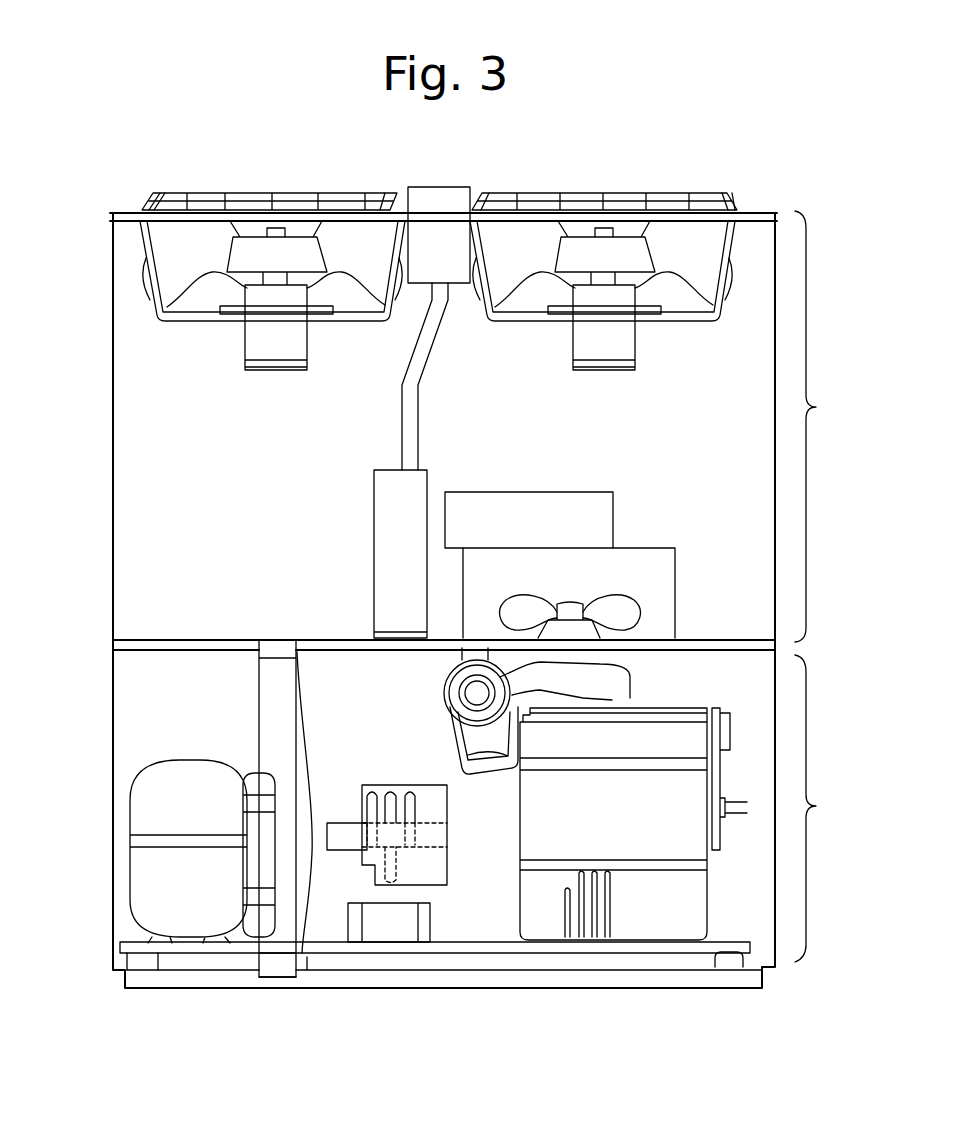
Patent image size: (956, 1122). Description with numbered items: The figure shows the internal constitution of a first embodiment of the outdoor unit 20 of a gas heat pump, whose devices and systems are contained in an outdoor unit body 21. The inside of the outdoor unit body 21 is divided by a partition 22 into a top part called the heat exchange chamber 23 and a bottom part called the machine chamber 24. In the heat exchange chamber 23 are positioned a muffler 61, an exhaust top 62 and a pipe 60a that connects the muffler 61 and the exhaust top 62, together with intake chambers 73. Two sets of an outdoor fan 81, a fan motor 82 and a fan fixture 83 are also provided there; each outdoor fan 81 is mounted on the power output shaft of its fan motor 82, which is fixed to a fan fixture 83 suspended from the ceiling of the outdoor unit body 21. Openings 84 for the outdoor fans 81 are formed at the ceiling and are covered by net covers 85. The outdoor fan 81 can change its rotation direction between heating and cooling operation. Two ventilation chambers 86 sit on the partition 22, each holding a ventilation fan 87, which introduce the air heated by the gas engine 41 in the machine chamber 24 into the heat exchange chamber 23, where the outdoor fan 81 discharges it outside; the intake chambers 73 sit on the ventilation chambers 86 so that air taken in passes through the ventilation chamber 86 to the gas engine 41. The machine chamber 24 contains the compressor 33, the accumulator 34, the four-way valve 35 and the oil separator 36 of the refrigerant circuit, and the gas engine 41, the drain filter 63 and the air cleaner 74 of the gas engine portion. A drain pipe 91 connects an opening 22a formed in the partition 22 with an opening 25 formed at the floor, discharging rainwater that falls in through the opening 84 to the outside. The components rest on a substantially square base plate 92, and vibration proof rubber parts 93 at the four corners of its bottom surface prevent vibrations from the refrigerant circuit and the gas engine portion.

The outdoor unit 20 is at (714, 165).
The outdoor unit body 21 is at (113, 612).
The partition 22 is at (148, 640).
The opening 22a is at (280, 640).
The heat exchange chamber 23 is at (821, 426).
The machine chamber 24 is at (821, 808).
The opening 25 is at (260, 973).
The compressor 33 is at (400, 785).
The accumulator 34 is at (152, 760).
The four-way valve 35 is at (338, 823).
The oil separator 36 is at (248, 775).
The gas engine 41 is at (700, 910).
The pipe 60a is at (420, 422).
The muffler 61 is at (374, 510).
The exhaust top 62 is at (432, 208).
The drain filter 63 is at (430, 915).
The intake chamber 73 is at (545, 492).
The air cleaner 74 is at (444, 695).
The outdoor fan 81 is at (180, 285).
The fan motor 82 is at (276, 372).
The fan fixture 83 is at (345, 322).
The opening 84 is at (175, 195).
The net cover 85 is at (337, 194).
The ventilation chamber 86 is at (670, 548).
The ventilation fan 87 is at (640, 607).
The drain pipe 91 is at (298, 690).
The base plate 92 is at (503, 952).
The vibration proof rubber part 93 is at (140, 965).